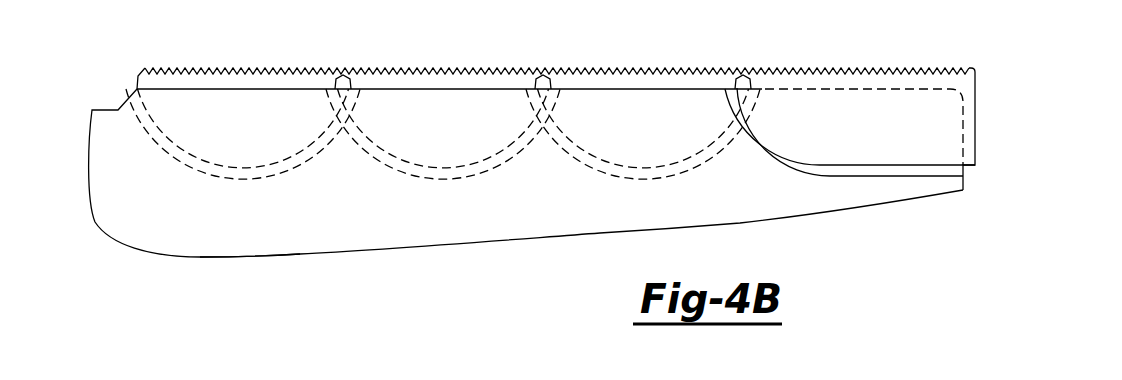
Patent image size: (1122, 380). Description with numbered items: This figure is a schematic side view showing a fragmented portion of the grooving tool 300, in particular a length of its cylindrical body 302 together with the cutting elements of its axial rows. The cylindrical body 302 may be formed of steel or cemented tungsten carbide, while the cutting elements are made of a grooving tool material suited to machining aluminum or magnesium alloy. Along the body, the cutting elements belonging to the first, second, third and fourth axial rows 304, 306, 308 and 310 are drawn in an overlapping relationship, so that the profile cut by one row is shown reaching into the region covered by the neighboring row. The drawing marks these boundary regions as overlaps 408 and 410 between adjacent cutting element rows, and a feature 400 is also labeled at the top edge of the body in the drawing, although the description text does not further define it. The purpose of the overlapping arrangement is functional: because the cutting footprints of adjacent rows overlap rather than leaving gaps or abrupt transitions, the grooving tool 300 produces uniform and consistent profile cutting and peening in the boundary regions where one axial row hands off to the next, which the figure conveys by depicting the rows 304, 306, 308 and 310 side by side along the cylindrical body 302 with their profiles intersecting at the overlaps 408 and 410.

The grooving tool 300 is at (163, 260).
The cylindrical body 302 is at (276, 259).
The first axial row of cutting elements 304 is at (848, 135).
The second axial row of cutting elements 306 is at (631, 135).
The third axial row of cutting elements 308 is at (432, 135).
The fourth axial row of cutting elements 310 is at (231, 135).
The textured top layer 400 is at (138, 72).
The overlap 408 is at (544, 72).
The overlap 410 is at (344, 72).